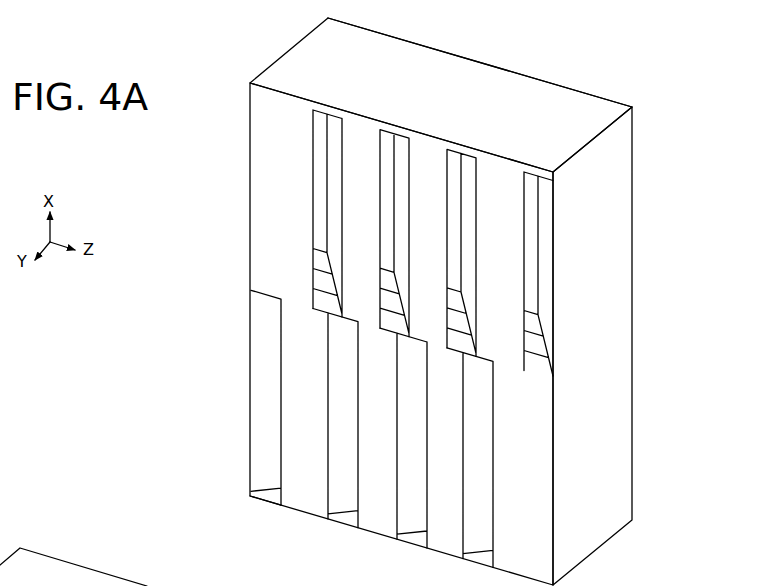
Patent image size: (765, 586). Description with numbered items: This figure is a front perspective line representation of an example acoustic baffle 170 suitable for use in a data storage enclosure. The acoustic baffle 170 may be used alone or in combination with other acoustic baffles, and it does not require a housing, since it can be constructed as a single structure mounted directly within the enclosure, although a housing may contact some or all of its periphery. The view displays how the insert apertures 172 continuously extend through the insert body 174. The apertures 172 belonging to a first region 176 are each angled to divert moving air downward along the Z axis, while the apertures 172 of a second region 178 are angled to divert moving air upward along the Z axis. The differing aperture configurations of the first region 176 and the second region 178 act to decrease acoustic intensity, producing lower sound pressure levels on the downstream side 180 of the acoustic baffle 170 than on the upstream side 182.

The acoustic baffle 170 is at (621, 39).
The insert apertures 172 is at (312, 186).
The insert body 174 is at (344, 70).
The first region 176 is at (559, 256).
The second region 178 is at (498, 438).
The downstream side 180 is at (469, 34).
The upstream side 182 is at (219, 462).